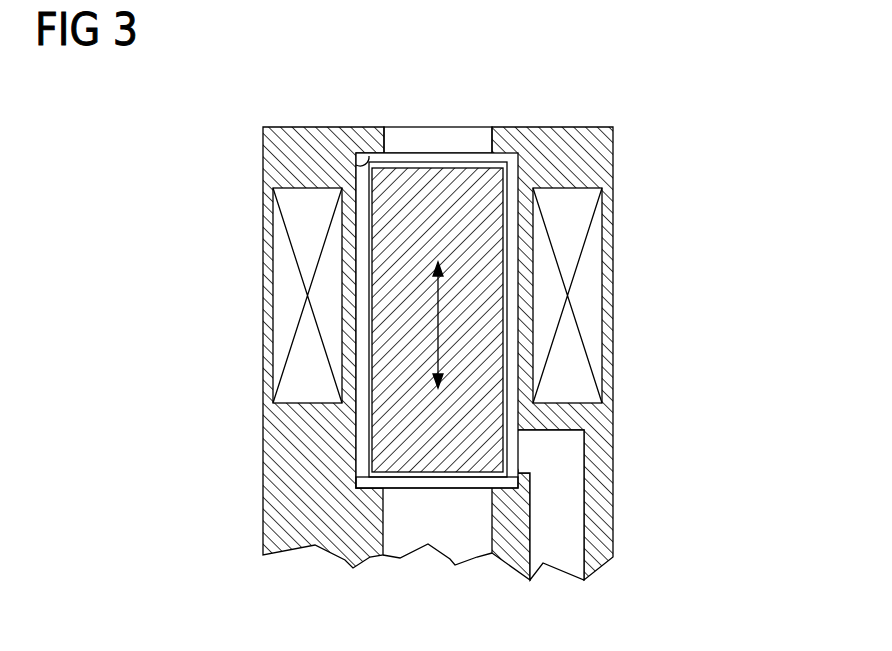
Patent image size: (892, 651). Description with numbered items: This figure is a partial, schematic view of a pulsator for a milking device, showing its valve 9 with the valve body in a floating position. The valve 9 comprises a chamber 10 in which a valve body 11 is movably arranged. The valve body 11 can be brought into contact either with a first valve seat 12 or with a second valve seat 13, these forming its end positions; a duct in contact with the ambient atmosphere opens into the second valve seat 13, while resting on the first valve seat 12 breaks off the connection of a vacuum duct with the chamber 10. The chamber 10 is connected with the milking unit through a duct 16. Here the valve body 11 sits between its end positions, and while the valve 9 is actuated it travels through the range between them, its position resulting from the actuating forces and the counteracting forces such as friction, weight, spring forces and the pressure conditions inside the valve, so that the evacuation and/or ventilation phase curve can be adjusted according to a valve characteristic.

The valve 9 is at (663, 214).
The chamber 10 is at (500, 160).
The valve body 11 is at (395, 452).
The first valve seat 12 is at (370, 491).
The second valve seat 13 is at (346, 157).
The duct 16 is at (568, 510).